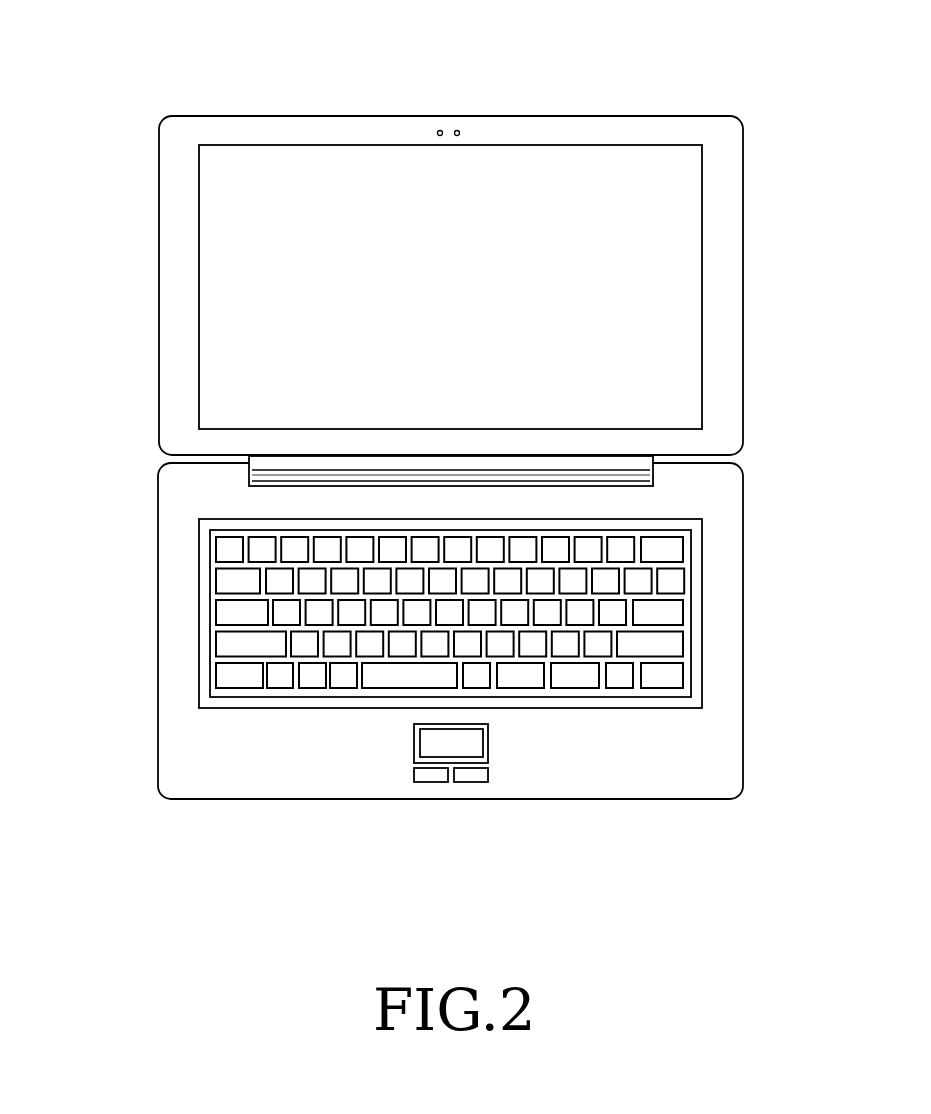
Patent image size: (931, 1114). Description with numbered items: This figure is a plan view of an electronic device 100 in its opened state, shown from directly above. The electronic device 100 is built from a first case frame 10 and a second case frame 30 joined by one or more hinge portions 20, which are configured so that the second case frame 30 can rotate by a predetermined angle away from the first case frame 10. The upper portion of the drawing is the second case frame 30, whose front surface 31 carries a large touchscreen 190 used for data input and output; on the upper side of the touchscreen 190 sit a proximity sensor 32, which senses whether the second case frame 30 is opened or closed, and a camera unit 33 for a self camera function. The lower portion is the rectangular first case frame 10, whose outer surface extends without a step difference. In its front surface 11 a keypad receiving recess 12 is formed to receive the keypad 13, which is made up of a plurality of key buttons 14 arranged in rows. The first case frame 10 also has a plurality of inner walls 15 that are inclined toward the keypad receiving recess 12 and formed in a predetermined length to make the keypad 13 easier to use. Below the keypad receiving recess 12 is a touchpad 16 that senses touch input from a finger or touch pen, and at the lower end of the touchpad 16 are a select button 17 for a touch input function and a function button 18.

The electronic device 100 is at (117, 78).
The second case frame 30 is at (152, 280).
The front surface 31 is at (647, 131).
The proximity sensor 32 is at (440, 131).
The camera unit 33 is at (457, 131).
The touchscreen 190 is at (665, 238).
The hinge portions 20 is at (637, 470).
The first case frame 10 is at (150, 600).
The front surface 11 is at (700, 757).
The keypad receiving recess 12 is at (460, 588).
The keypad 13 is at (693, 550).
The key buttons 14 is at (670, 580).
The inner walls 15 is at (697, 672).
The touchpad 16 is at (473, 750).
The select button 17 is at (430, 778).
The function button 18 is at (476, 778).